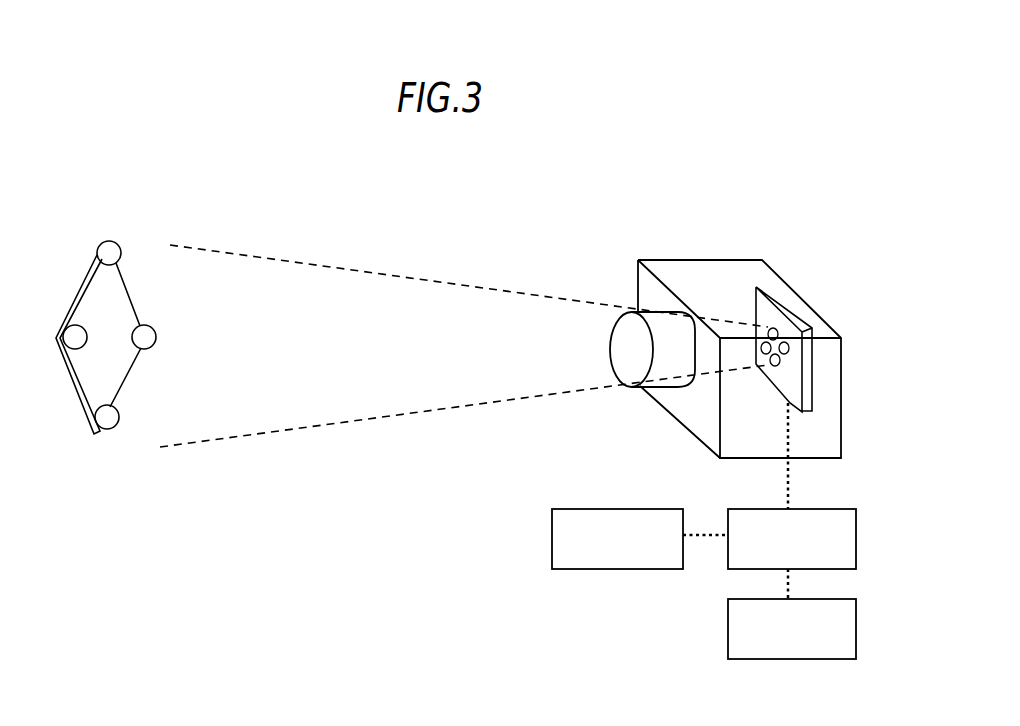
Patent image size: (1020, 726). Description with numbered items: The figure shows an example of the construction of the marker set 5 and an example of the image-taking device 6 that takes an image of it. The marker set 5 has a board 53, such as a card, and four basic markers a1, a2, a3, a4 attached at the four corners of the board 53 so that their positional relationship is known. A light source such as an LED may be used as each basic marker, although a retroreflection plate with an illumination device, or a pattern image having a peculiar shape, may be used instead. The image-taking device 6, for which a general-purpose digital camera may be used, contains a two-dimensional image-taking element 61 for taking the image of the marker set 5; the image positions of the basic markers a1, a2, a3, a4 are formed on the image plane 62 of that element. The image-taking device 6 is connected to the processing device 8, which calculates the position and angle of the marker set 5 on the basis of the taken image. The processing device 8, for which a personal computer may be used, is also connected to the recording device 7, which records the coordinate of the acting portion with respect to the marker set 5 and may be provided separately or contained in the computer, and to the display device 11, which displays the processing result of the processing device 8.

The marker set 5 is at (106, 338).
The board 53 is at (87, 275).
The basic marker a1 is at (159, 337).
The basic marker a2 is at (105, 430).
The basic marker a3 is at (56, 337).
The basic marker a4 is at (109, 242).
The image-taking device 6 is at (698, 240).
The two-dimensional image-taking element 61 is at (812, 383).
The image plane 62 is at (790, 372).
The recording device 7 is at (728, 628).
The processing device 8 is at (833, 508).
The display device 11 is at (612, 508).